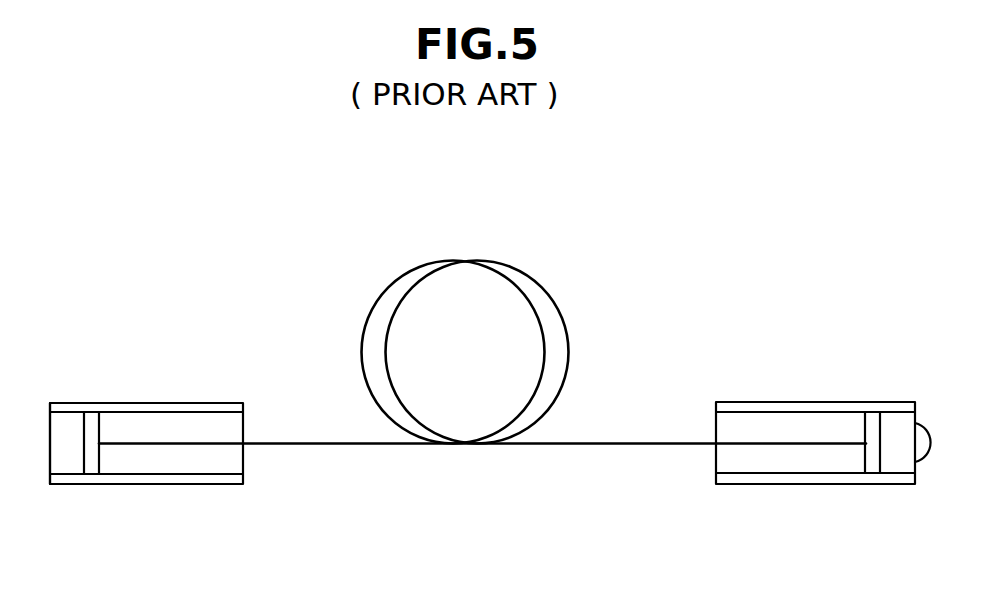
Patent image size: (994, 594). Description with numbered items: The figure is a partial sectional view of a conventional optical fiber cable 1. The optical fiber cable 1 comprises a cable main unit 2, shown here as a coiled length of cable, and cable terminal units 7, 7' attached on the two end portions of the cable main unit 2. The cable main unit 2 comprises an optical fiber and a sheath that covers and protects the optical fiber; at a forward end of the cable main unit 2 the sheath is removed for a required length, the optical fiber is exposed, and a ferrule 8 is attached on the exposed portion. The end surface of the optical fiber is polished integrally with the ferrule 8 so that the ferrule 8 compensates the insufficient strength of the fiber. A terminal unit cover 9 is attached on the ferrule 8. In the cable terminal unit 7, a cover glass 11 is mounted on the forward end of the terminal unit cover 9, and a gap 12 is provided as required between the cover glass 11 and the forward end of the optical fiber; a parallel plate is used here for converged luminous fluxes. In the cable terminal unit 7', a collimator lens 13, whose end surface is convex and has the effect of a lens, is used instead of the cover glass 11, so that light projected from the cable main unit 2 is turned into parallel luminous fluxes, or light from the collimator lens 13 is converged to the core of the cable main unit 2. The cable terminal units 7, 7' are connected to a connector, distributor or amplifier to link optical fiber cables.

The optical fiber cable 1 is at (579, 307).
The cable main unit 2 is at (334, 443).
The cable terminal unit 7 is at (146, 395).
The cable terminal unit 7' is at (815, 395).
The ferrule 8 is at (206, 458).
The terminal unit cover 9 is at (207, 402).
The cover glass 11 is at (50, 459).
The gap 12 is at (92, 422).
The collimator lens 13 is at (917, 468).